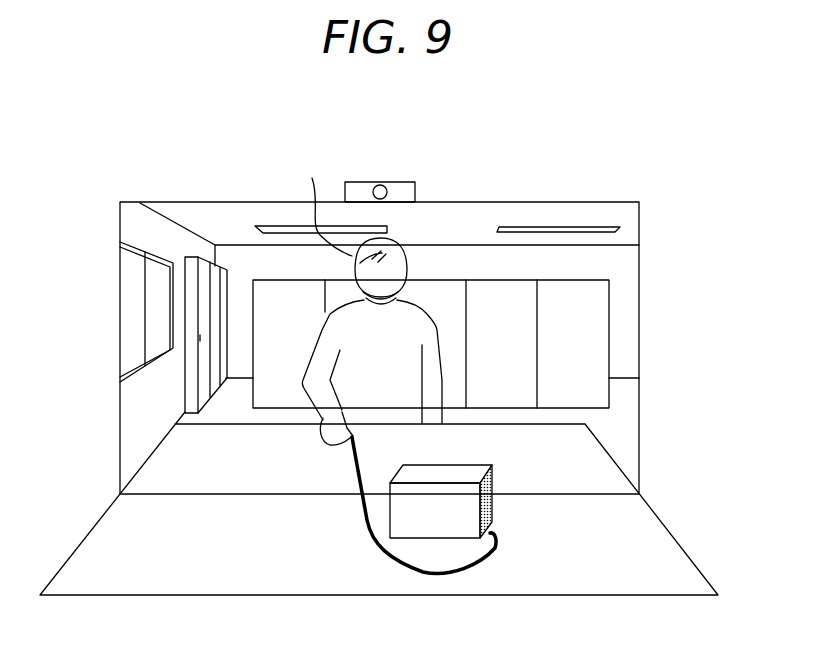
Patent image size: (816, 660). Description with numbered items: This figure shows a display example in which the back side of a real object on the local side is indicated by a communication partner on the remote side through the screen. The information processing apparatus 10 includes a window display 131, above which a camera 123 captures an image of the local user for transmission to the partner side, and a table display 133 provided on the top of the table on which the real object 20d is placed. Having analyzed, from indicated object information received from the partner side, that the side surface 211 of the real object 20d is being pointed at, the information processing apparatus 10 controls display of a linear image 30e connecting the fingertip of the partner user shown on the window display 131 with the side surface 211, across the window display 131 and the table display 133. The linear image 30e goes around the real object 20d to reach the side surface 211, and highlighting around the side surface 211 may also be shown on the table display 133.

The information processing apparatus 10 is at (591, 173).
The camera 123 is at (392, 182).
The window display 131 is at (640, 234).
The table display 133 is at (664, 524).
The side surface 211 is at (495, 483).
The real object 20d is at (435, 539).
The linear image 30e is at (368, 537).